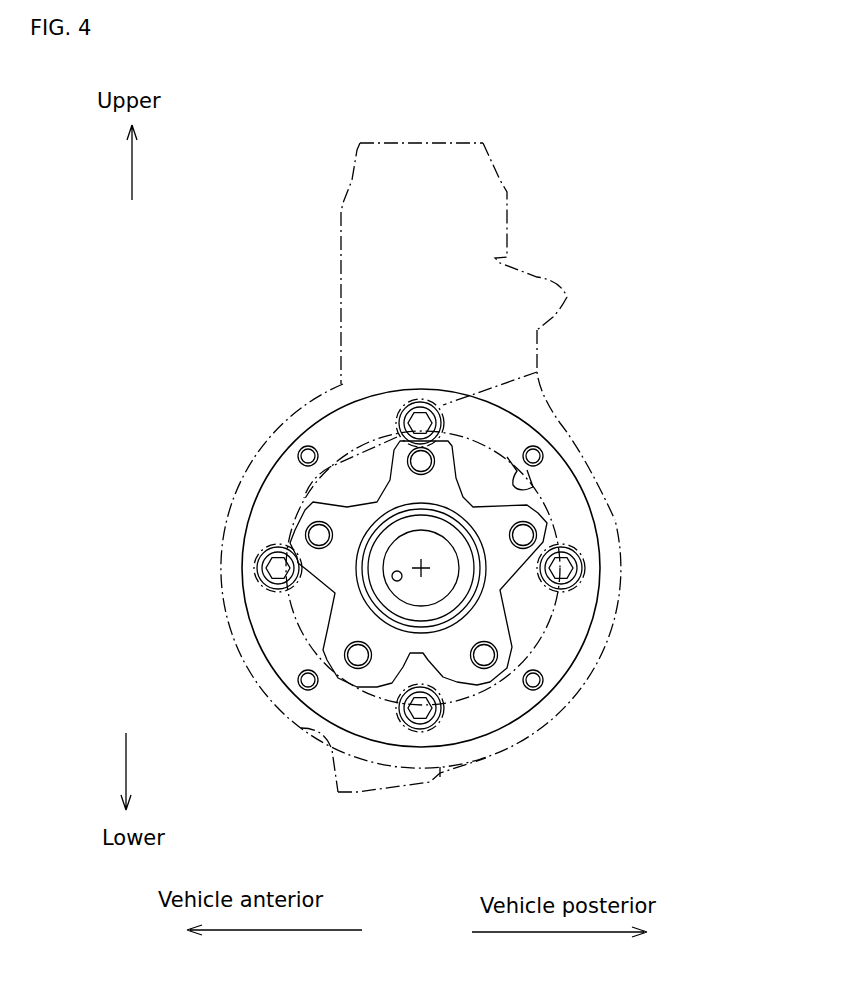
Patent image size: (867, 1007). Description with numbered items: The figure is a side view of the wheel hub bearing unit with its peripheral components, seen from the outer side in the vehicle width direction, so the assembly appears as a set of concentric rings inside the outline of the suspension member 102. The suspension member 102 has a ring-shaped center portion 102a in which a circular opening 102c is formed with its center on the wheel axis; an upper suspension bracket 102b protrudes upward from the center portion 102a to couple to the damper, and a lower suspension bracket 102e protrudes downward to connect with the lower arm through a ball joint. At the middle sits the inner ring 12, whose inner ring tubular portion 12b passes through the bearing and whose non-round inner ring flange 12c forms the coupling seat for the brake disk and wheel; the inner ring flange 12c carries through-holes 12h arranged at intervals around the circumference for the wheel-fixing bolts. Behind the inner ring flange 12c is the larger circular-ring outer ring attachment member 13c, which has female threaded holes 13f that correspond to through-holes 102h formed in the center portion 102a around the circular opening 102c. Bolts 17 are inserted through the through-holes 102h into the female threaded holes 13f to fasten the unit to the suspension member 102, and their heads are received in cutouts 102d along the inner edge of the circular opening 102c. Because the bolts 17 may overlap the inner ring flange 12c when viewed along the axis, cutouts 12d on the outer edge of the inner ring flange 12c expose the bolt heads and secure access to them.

The inner ring 12 is at (412, 572).
The inner ring tubular portion 12b is at (373, 588).
The inner ring flange 12c is at (397, 445).
The cutouts 12d is at (413, 718).
The through-holes 12h is at (350, 655).
The outer ring attachment member 13c is at (273, 490).
The female threaded holes 13f is at (299, 457).
The bolts 17 is at (443, 418).
The suspension member 102 is at (339, 243).
The center portion 102a is at (610, 529).
The upper suspension bracket 102b is at (497, 168).
The circular opening 102c is at (533, 492).
The cutouts 102d is at (537, 376).
The lower suspension bracket 102e is at (440, 770).
The through-holes 102h is at (541, 457).